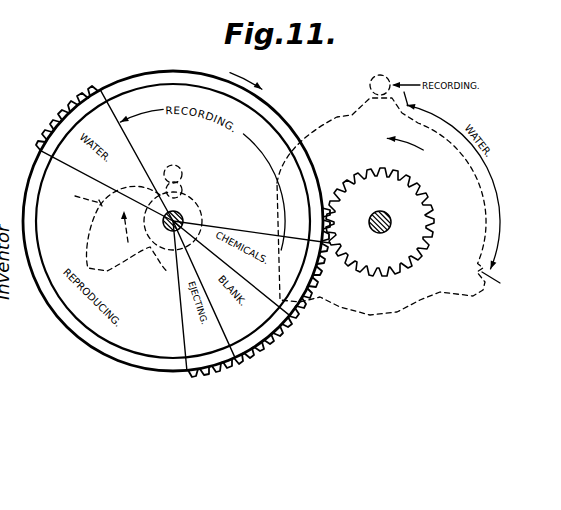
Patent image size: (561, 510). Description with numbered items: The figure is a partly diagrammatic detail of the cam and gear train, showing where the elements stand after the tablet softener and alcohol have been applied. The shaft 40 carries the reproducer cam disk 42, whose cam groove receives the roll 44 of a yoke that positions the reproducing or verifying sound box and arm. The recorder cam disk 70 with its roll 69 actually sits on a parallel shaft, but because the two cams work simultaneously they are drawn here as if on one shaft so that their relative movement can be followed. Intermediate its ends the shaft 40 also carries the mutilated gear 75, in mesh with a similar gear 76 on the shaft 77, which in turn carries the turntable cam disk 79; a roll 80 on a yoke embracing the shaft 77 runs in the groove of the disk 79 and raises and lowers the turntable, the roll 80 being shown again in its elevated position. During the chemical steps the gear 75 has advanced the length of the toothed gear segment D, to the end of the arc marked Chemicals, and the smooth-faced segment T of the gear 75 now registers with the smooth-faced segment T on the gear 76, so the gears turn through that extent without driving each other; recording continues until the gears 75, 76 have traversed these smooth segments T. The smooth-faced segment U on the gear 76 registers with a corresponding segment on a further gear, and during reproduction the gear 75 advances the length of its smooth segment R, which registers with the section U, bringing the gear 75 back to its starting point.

The shaft 40 is at (184, 206).
The reproducer cam disk 42 is at (162, 272).
The roll 44 is at (188, 182).
The roll 69 is at (172, 165).
The recorder cam disk 70 is at (75, 197).
The mutilated gear 75 is at (275, 122).
The gear 76 is at (430, 230).
The shaft 77 is at (383, 233).
The turntable cam disk 79 is at (398, 313).
The turntable roll 80 is at (371, 88).
The smooth-faced segment T is at (173, 73).
The smooth segment R is at (68, 330).
The gear segment D is at (279, 333).
The smooth-faced segment U is at (411, 178).